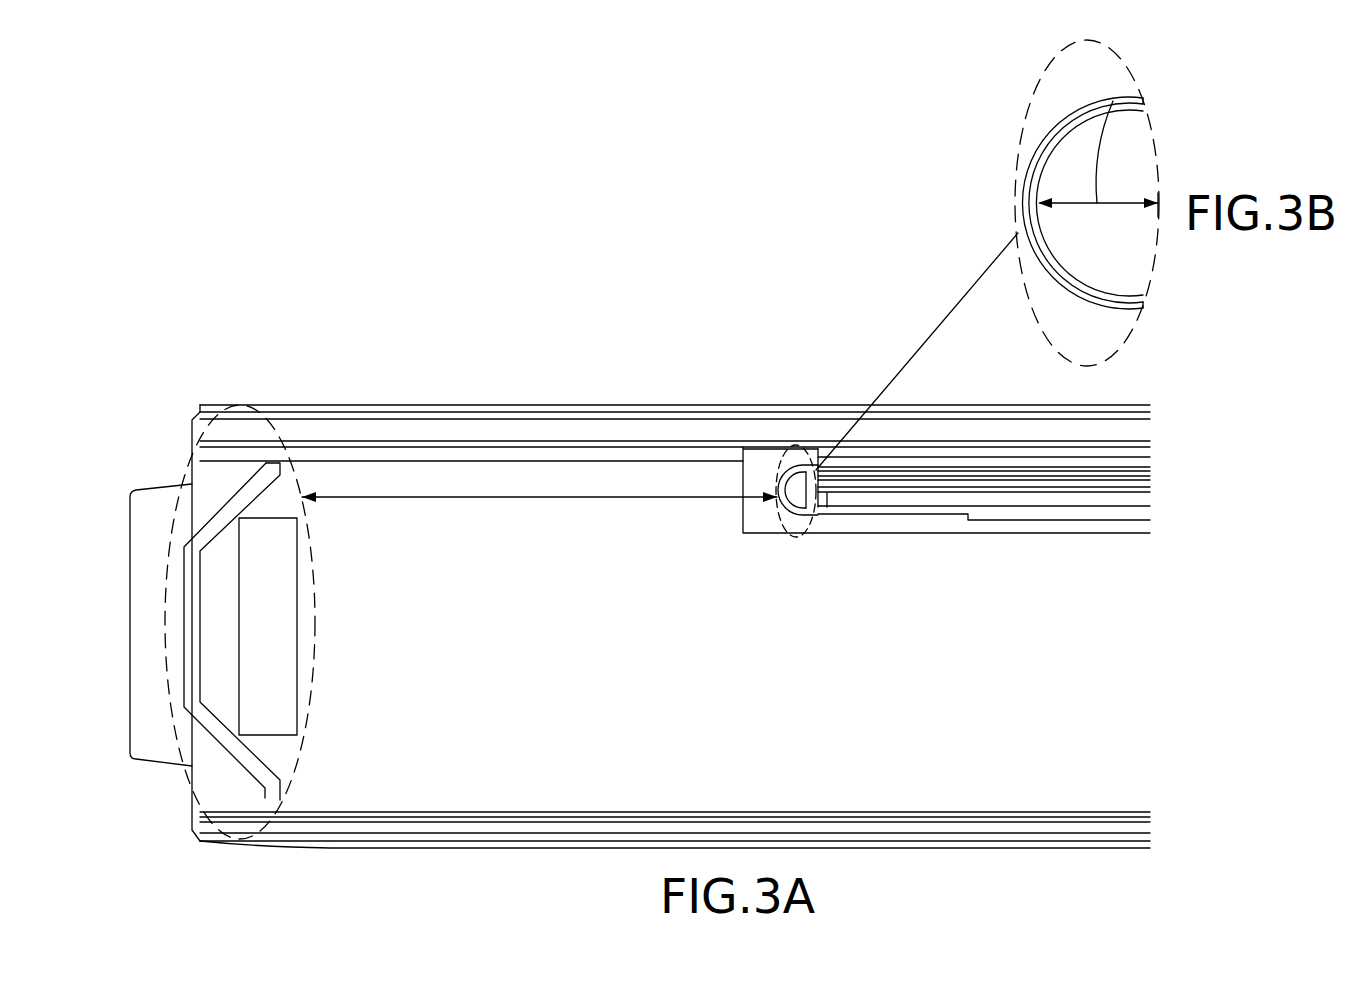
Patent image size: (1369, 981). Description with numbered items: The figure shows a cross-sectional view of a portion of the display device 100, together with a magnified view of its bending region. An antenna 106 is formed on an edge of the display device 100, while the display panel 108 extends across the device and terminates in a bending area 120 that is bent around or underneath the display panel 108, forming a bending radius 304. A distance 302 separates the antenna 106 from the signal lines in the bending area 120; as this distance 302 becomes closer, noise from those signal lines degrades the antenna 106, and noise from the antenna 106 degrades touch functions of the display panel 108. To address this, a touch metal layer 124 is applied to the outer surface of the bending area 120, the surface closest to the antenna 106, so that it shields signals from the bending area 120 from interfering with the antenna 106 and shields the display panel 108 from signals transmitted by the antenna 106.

In FIG. 3A, the display device 100 is at (727, 266).
In FIG. 3A, the antenna 106 is at (246, 406).
In FIG. 3A, the display panel 108 is at (983, 474).
In FIG. 3B, the display panel 108 is at (1101, 289).
In FIG. 3A, the bending area 120 is at (806, 452).
In FIG. 3B, the touch metal layer 124 is at (1080, 108).
In FIG. 3A, the distance 302 is at (491, 497).
In FIG. 3B, the bending radius 304 is at (1134, 60).